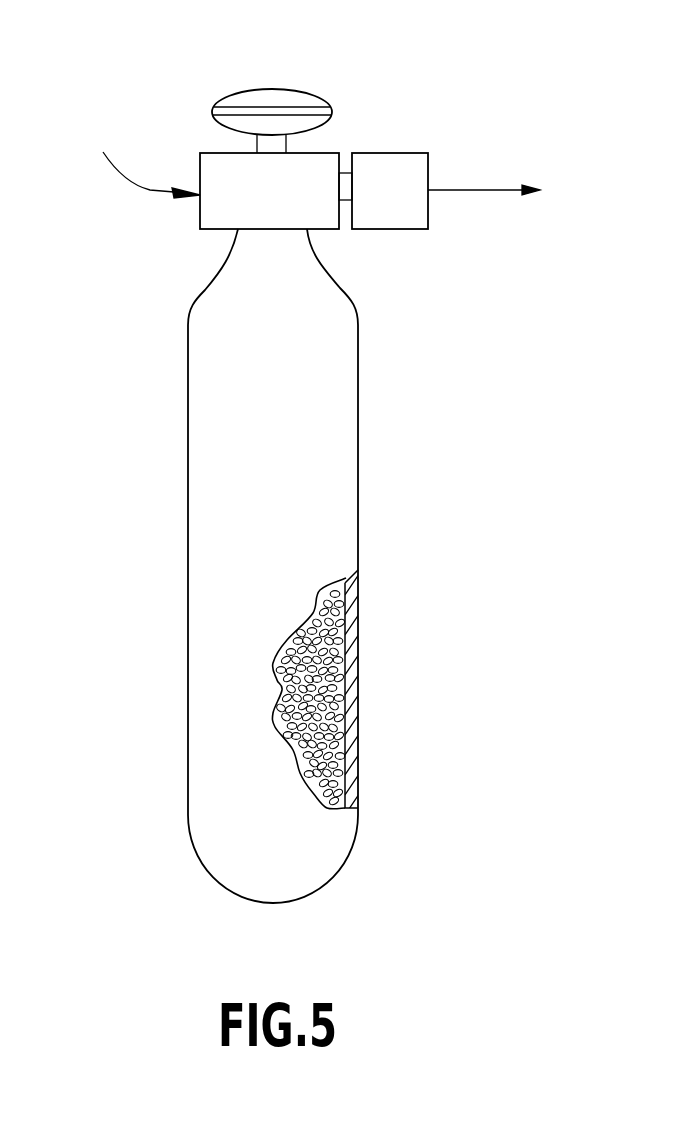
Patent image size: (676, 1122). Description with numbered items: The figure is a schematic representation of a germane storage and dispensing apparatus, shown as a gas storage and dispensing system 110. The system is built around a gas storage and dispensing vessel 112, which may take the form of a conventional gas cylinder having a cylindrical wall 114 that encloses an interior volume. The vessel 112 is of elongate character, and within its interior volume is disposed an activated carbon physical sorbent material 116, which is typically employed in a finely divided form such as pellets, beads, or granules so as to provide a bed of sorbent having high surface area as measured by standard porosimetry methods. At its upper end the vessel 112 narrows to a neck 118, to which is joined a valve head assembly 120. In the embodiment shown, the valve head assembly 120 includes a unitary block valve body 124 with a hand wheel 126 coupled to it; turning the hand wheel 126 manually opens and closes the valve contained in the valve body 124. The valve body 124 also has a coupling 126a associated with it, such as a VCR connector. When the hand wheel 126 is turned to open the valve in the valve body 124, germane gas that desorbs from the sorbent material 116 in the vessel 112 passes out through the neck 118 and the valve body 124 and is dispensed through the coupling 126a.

The gas storage and dispensing system 110 is at (113, 380).
The gas storage and dispensing vessel 112 is at (188, 630).
The cylindrical wall 114 is at (348, 605).
The activated carbon physical sorbent material 116 is at (323, 685).
The neck 118 is at (277, 235).
The valve head assembly 120 is at (137, 157).
The unitary block valve body 124 is at (327, 165).
The hand wheel 126 is at (277, 88).
The coupling 126a is at (395, 160).